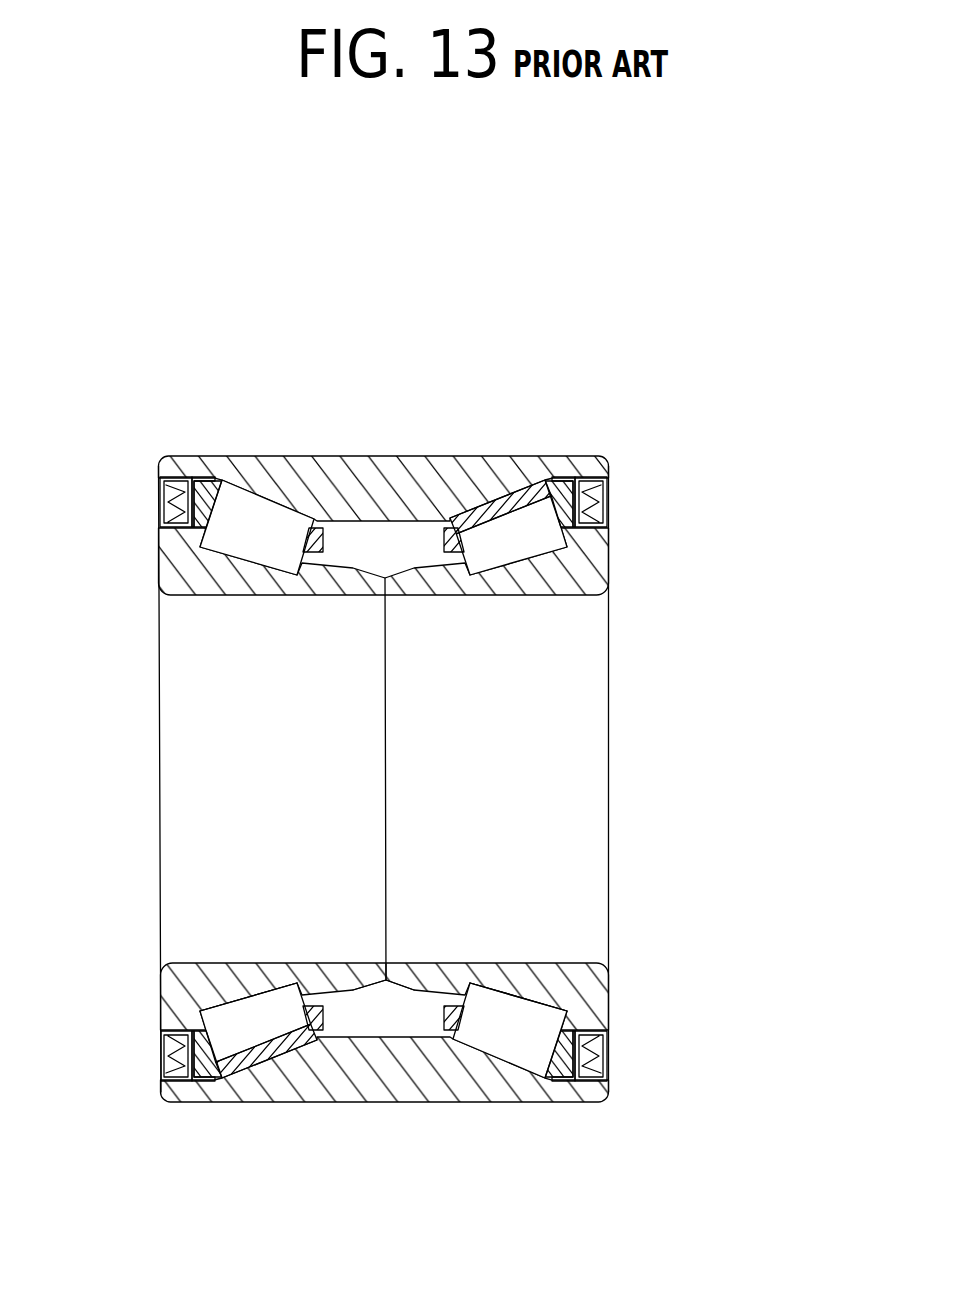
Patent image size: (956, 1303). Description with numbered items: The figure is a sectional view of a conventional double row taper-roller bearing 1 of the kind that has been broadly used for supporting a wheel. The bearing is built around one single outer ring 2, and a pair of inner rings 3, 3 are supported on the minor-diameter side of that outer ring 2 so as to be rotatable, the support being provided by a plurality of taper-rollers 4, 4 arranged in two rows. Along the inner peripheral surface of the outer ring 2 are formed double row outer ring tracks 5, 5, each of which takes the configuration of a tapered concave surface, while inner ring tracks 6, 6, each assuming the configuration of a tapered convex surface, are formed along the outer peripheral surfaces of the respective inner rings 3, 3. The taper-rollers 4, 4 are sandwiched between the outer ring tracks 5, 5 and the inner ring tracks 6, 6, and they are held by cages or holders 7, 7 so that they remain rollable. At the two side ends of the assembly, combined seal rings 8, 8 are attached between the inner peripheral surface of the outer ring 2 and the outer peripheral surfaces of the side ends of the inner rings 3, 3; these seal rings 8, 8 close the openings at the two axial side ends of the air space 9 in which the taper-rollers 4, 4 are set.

The double row taper-roller bearing 1 is at (392, 457).
The outer ring 2 is at (258, 481).
The inner ring 3 is at (220, 587).
The taper-roller 4 is at (233, 507).
The outer ring track 5 is at (293, 510).
The inner ring track 6 is at (263, 1000).
The cage 7 is at (557, 477).
The combined seal ring 8 is at (160, 489).
The air space 9 is at (385, 1015).